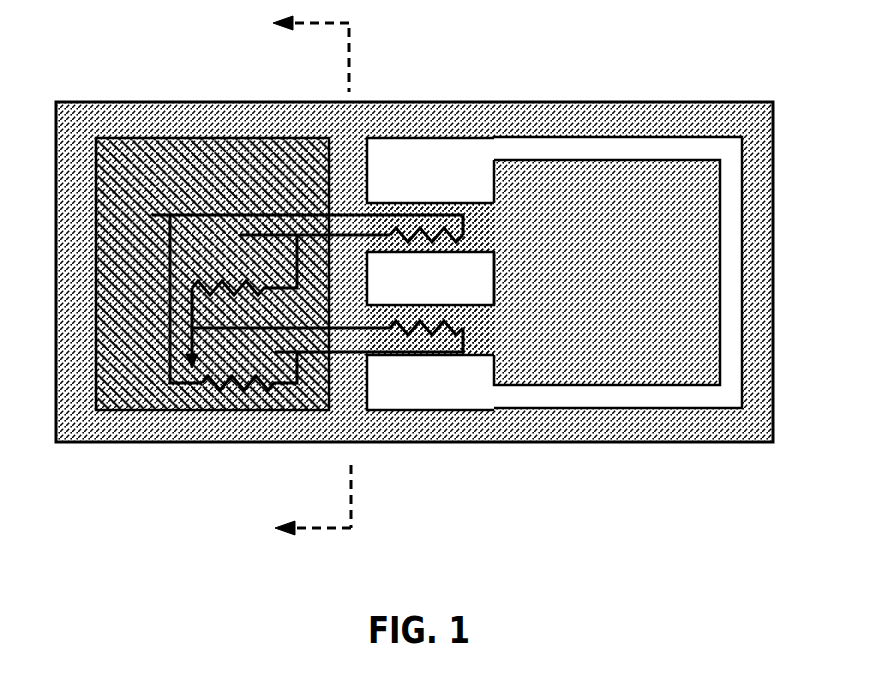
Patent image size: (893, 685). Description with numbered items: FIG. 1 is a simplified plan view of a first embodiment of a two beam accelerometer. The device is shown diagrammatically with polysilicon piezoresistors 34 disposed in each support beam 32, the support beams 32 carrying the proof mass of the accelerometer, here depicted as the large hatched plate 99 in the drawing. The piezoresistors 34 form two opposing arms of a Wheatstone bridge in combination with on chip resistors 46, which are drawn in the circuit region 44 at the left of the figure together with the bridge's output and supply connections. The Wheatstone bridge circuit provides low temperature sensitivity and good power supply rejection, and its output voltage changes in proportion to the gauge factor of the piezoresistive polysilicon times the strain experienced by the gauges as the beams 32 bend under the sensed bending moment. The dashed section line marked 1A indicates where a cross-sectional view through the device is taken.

The sensing element region 44 is at (140, 138).
The on chip resistors 46 is at (240, 392).
The piezoresistors 34 is at (406, 238).
The support beam 32 is at (478, 203).
The isolated platform 99 is at (625, 295).
The section line 1A- 1A is at (311, 275).